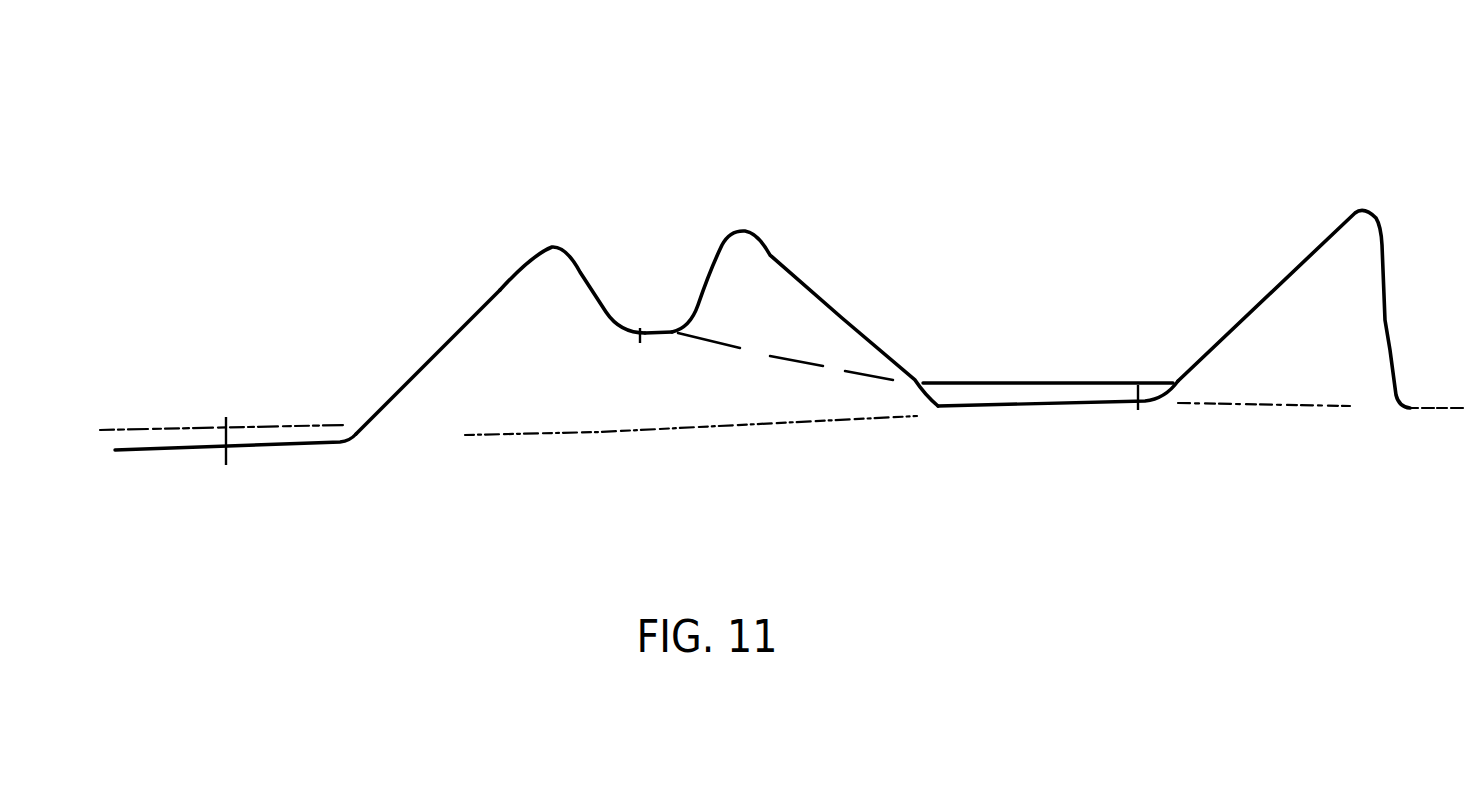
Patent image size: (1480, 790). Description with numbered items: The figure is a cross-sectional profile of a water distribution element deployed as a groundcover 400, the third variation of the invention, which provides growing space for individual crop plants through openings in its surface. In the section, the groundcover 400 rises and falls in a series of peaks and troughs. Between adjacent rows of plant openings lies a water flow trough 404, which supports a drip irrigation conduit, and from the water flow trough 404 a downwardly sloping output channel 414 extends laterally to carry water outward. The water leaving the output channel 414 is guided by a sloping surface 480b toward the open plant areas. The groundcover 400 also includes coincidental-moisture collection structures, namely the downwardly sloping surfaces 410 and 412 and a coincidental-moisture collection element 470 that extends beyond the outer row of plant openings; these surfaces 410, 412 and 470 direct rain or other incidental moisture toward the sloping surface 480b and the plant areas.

The groundcover 400 is at (366, 102).
The sloping surface 480b is at (280, 427).
The downwardly sloping surface 410 is at (452, 317).
The water flow trough 404 is at (650, 301).
The output channel 414 is at (737, 332).
The downwardly sloping surface 412 is at (795, 268).
The coincidental-moisture collection element 470 is at (1250, 308).